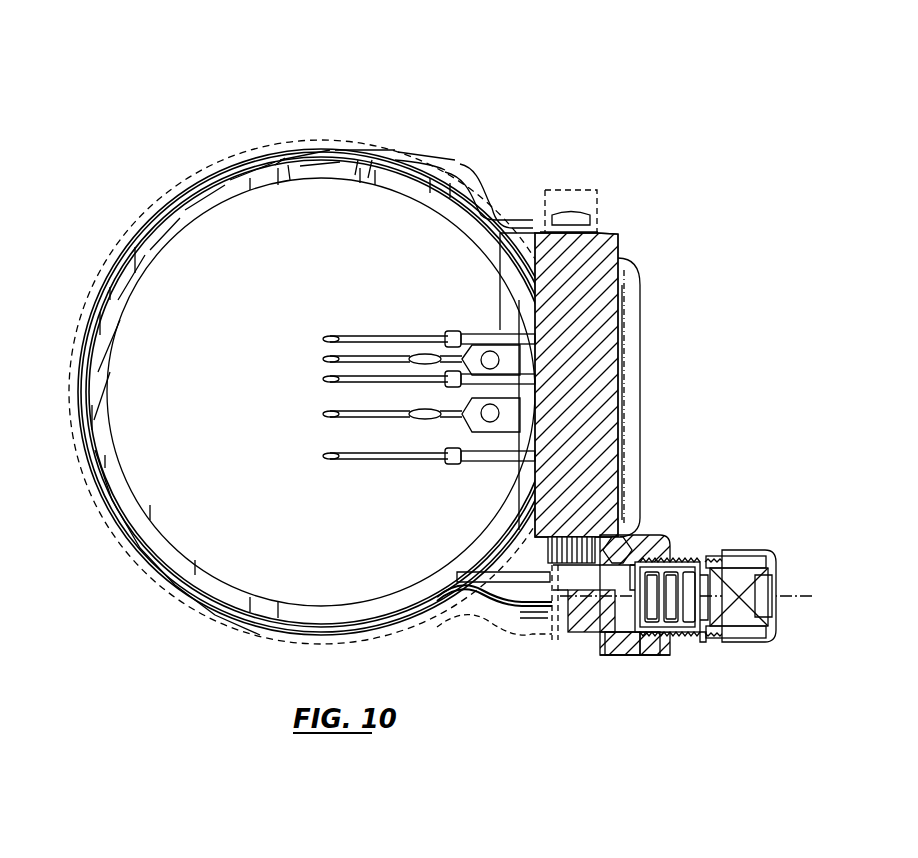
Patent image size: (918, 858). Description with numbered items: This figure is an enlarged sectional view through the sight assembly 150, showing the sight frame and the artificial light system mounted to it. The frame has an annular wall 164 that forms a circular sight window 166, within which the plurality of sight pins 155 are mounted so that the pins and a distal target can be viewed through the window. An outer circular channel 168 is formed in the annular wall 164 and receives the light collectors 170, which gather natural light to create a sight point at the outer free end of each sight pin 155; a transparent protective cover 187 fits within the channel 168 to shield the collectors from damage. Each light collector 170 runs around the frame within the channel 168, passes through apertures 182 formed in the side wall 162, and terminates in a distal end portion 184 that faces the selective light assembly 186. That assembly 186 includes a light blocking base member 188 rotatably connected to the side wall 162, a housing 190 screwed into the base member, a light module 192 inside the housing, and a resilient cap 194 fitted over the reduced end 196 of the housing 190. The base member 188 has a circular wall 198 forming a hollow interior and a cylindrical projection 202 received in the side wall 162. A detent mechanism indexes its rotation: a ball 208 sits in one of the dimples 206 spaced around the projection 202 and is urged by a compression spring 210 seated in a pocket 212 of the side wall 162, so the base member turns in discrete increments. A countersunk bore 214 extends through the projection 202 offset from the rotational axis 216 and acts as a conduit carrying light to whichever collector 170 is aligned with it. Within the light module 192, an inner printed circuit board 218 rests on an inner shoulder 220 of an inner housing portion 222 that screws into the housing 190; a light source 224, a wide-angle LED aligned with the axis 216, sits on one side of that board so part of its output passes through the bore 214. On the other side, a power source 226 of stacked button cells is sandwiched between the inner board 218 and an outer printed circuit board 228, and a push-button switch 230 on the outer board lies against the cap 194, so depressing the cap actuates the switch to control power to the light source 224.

The sight assembly 150 is at (150, 70).
The sight pins 155 is at (352, 380).
The side wall 162 is at (612, 318).
The annular wall 164 is at (145, 247).
The sight window 166 is at (215, 552).
The outer circular channel 168 is at (167, 197).
The light collectors 170 is at (276, 152).
The apertures 182 is at (556, 618).
The distal end portion 184 is at (500, 584).
The selective light assembly 186 is at (731, 650).
The protective cover 187 is at (362, 150).
The light blocking base member 188 is at (684, 560).
The housing 190 is at (709, 560).
The light module 192 is at (705, 634).
The cap 194 is at (752, 612).
The reduced end 196 is at (762, 556).
The circular wall 198 is at (655, 652).
The cylindrical projection 202 is at (586, 632).
The dimples 206 is at (648, 535).
The ball 208 is at (654, 553).
The compression spring 210 is at (604, 540).
The pocket 212 is at (568, 537).
The countersunk bore 214 is at (522, 582).
The rotational axis 216 is at (784, 592).
The inner printed circuit board 218 is at (616, 655).
The inner shoulder 220 is at (578, 580).
The inner housing portion 222 is at (700, 560).
The light source 224 is at (606, 642).
The power source 226 is at (662, 560).
The outer printed circuit board 228 is at (714, 625).
The push-button switch 230 is at (746, 600).